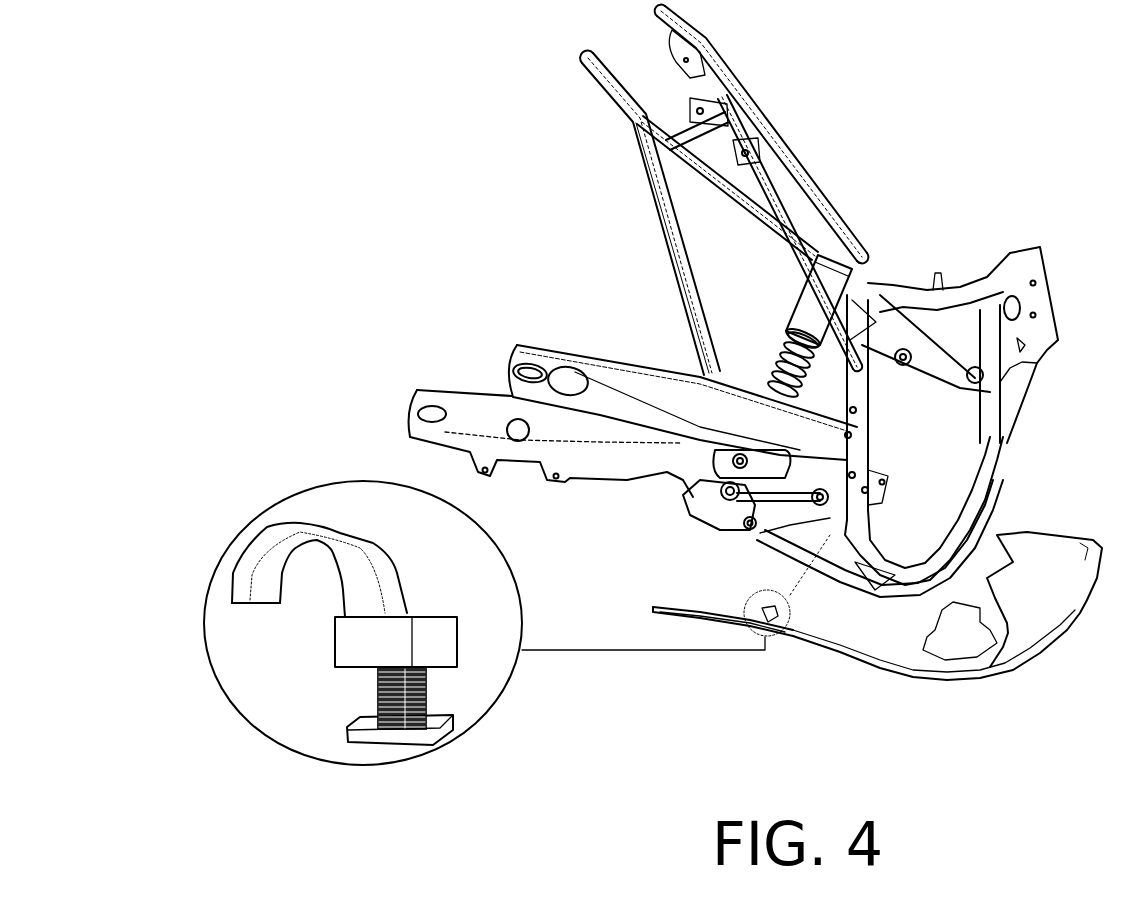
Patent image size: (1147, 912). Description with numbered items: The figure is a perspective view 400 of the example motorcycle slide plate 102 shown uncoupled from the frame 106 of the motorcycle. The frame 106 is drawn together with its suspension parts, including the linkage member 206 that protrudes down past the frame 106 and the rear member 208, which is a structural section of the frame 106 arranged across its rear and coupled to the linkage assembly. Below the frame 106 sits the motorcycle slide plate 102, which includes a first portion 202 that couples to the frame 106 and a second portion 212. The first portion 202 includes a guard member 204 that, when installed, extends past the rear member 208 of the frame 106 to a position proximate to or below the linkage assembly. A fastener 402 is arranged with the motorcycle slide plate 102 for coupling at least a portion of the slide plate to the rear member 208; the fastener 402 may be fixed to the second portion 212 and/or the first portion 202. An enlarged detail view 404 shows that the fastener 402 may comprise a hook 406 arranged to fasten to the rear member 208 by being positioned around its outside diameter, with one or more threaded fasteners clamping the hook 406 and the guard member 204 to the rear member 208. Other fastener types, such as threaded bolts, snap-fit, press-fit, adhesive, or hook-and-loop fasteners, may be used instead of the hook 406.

The perspective view 400 is at (293, 84).
The frame 106 is at (1077, 547).
The linkage member 206 is at (727, 537).
The rear member 208 is at (790, 530).
The motorcycle slide plate 102 is at (858, 650).
The first portion 202 is at (1010, 670).
The guard member 204 is at (700, 644).
The second portion 212 is at (791, 637).
The fastener 402 is at (808, 585).
The detail view 404 is at (310, 487).
The hook 406 is at (377, 547).